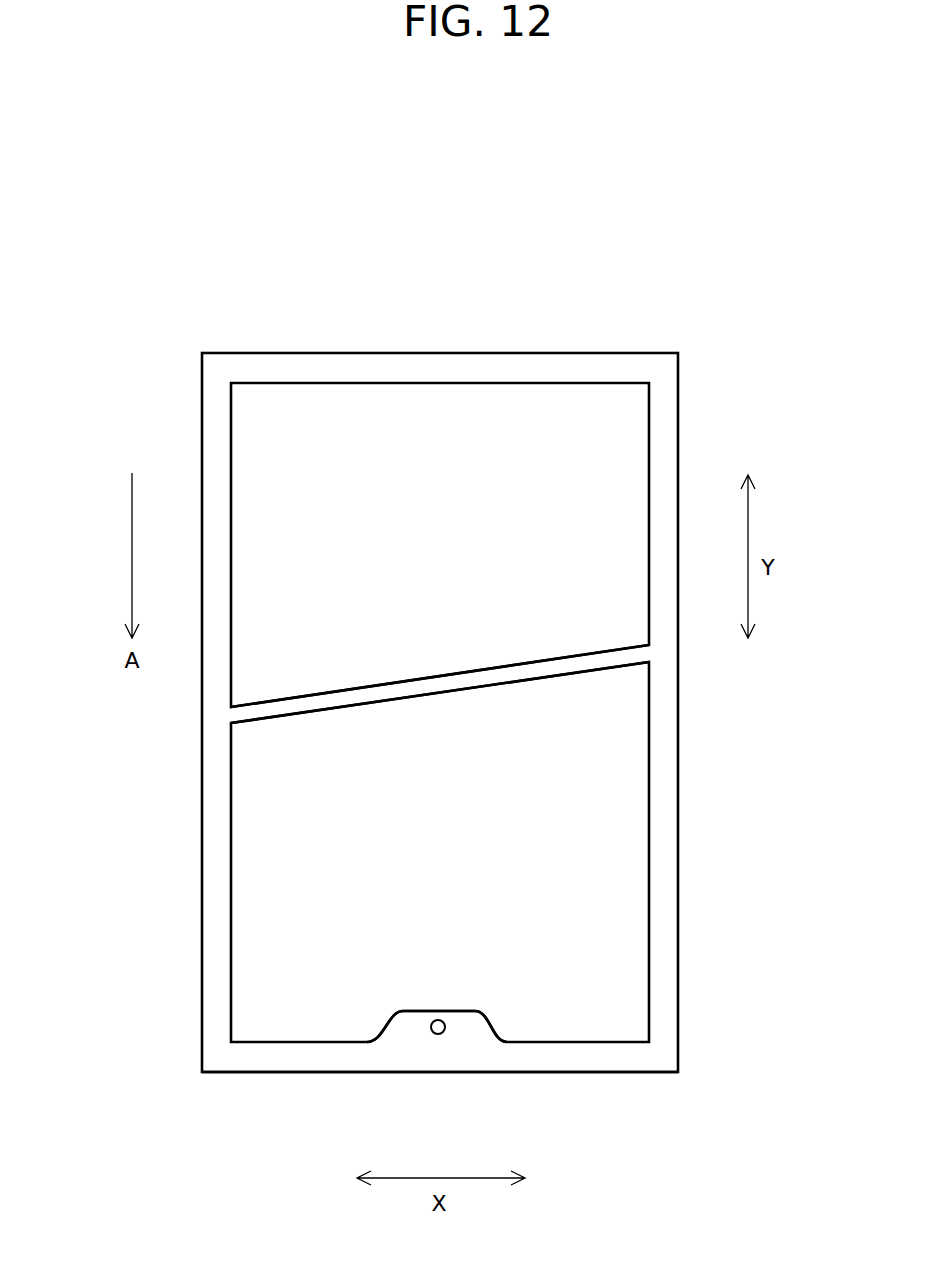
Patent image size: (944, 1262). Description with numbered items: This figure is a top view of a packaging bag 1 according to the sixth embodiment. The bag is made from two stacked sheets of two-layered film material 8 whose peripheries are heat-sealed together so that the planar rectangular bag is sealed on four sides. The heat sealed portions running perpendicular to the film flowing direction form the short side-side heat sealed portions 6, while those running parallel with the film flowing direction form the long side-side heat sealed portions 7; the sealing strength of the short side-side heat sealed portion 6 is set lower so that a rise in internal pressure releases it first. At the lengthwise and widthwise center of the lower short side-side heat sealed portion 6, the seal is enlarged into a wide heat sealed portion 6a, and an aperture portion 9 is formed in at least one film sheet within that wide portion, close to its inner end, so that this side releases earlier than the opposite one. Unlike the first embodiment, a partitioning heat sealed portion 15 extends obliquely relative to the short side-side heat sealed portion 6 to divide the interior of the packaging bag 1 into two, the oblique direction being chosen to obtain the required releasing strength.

The packaging bag 1 is at (703, 728).
The short side-side heat sealed portion 6 is at (457, 361).
The wide heat sealed portion 6a is at (433, 1011).
The long side-side heat sealed portion 7 is at (207, 797).
The film material 8 is at (608, 1063).
The aperture portion 9 is at (438, 1036).
The partitioning heat sealed portion 15 is at (405, 682).